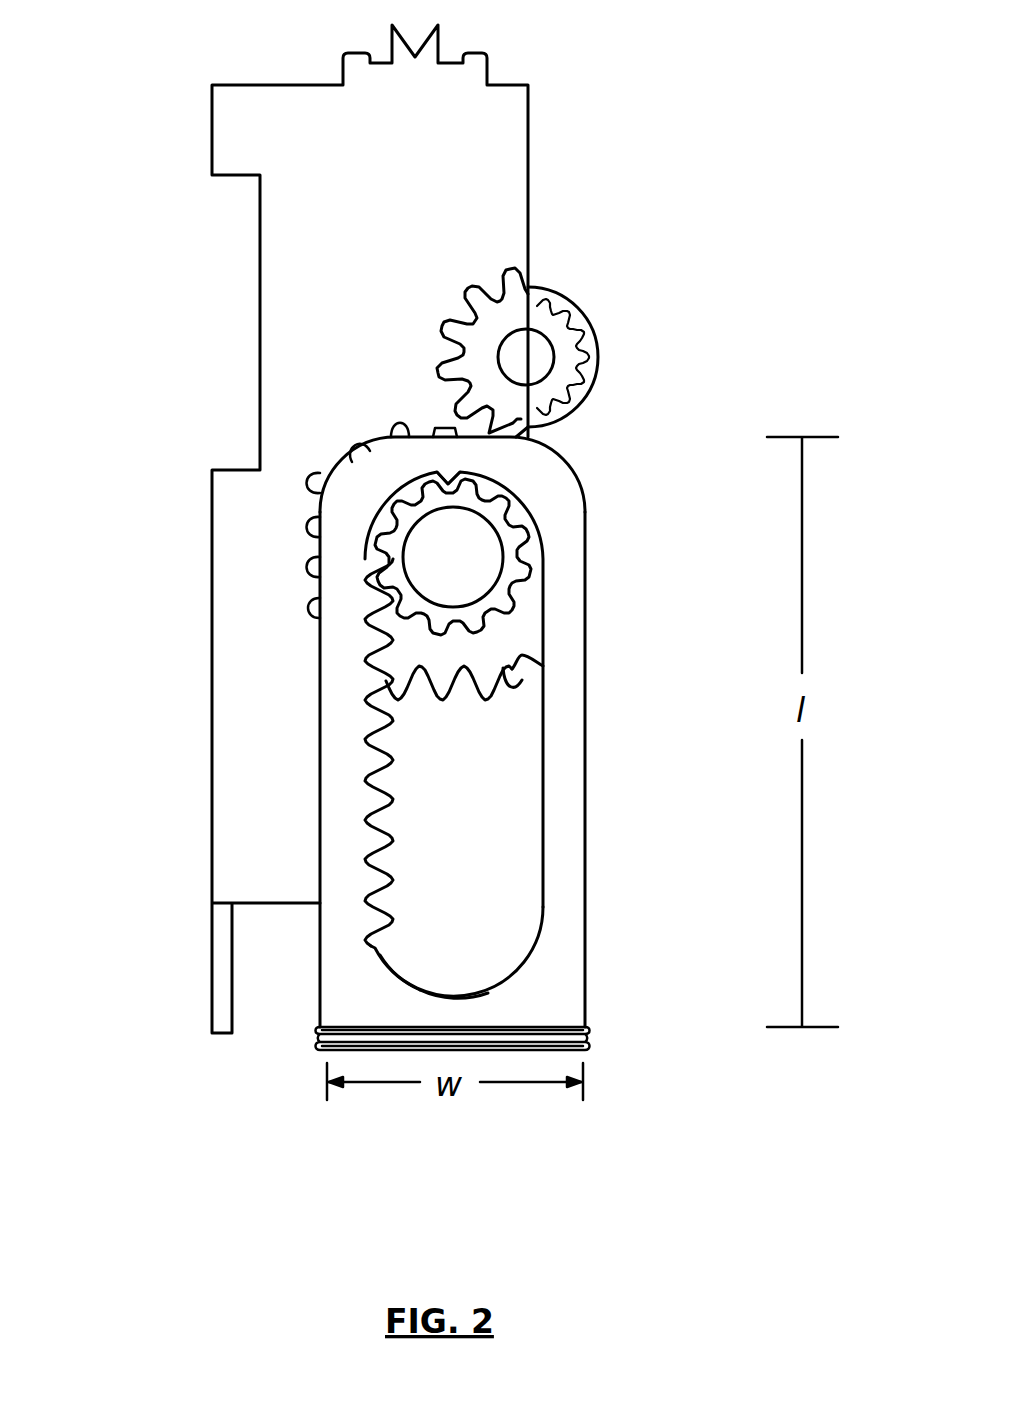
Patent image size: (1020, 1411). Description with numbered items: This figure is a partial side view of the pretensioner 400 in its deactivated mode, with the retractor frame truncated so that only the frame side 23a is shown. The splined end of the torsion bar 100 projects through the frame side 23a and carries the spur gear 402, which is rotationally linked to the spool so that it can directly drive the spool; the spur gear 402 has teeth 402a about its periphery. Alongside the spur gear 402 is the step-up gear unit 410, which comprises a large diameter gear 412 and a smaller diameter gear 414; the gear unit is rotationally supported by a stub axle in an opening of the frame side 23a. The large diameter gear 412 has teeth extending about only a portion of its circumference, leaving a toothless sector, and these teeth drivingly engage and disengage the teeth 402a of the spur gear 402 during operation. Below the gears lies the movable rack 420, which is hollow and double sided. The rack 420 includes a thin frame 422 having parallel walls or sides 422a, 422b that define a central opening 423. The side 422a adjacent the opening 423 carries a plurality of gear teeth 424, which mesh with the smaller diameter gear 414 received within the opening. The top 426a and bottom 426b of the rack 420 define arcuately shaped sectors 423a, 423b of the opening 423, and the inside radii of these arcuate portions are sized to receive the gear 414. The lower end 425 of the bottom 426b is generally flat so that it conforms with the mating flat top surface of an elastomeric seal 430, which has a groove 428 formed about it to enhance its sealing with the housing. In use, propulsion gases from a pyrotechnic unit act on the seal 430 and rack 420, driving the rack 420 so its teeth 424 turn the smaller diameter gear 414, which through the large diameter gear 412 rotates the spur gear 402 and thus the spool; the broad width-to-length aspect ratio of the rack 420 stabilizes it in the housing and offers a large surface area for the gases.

The frame side 23a is at (278, 115).
The torsion bar 100 is at (585, 296).
The spur gear 402 is at (534, 388).
The teeth 402a is at (483, 287).
The pretensioner 400 is at (414, 772).
The step-up gear unit 410 is at (515, 630).
The large diameter gear 412 is at (503, 668).
The smaller diameter gear 414 is at (522, 543).
The rack 420 is at (473, 763).
The frame 422 is at (414, 793).
The side 422a is at (340, 837).
The side 422b is at (567, 798).
The central opening 423 is at (487, 988).
The arcuately shaped sector 423a is at (437, 472).
The arcuately shaped sector 423b is at (446, 990).
The gear teeth 424 is at (467, 752).
The lower end 425 is at (563, 1025).
The top 426a is at (515, 468).
The bottom 426b is at (358, 998).
The groove 428 is at (592, 1047).
The seal 430 is at (558, 1056).